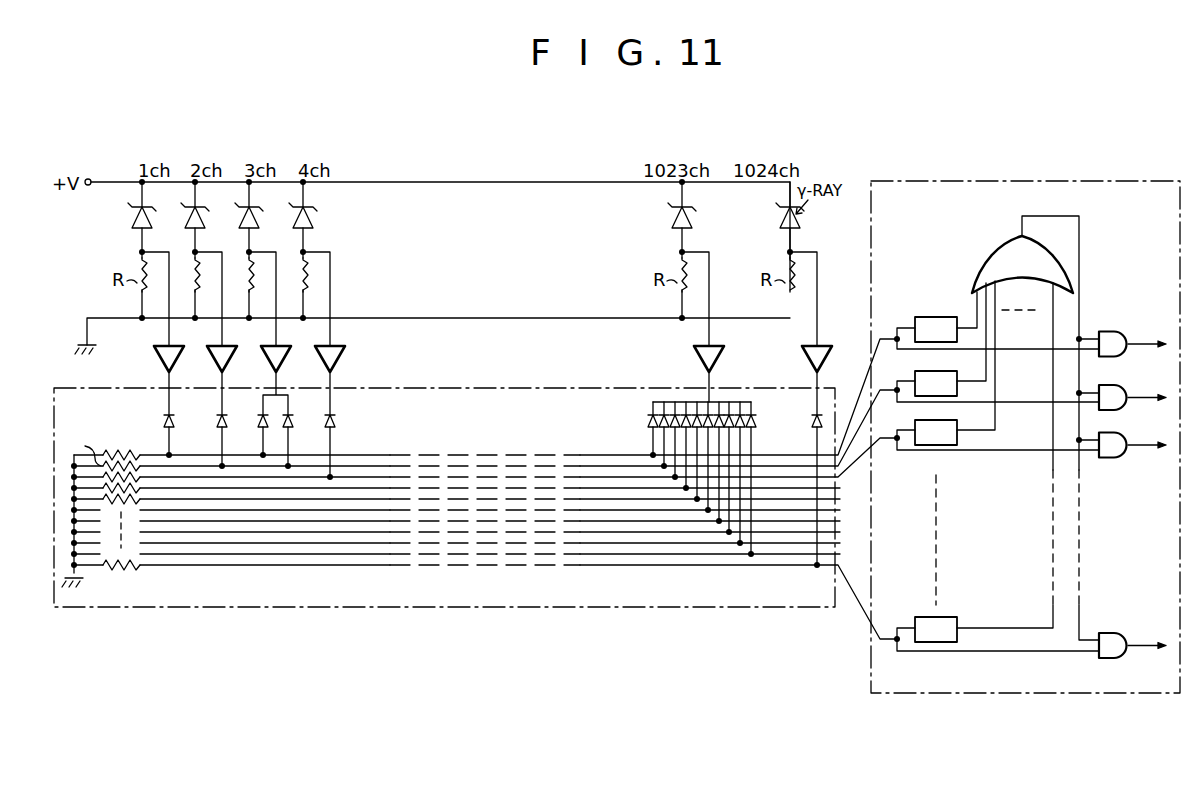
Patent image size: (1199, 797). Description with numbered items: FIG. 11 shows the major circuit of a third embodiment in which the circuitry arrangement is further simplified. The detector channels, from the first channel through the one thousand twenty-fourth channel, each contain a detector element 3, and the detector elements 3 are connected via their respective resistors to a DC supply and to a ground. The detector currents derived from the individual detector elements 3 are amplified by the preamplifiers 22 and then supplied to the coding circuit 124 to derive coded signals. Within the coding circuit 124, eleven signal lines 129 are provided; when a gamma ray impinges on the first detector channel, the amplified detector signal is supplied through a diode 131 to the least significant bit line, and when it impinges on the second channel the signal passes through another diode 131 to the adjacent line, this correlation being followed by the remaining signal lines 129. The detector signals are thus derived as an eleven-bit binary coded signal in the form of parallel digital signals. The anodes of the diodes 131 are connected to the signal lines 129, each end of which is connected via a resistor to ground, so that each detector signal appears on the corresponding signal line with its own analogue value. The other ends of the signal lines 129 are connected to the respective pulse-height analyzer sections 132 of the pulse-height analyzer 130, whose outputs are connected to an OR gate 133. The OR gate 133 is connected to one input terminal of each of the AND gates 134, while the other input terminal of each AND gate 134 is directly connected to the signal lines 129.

The detector elements 3 is at (133, 228).
The preamplifiers 22 is at (156, 364).
The coding circuit 124 is at (165, 607).
The signal lines 129 is at (354, 455).
The pulse-height analyzer 130 is at (1168, 181).
The diodes 131 is at (810, 414).
The pulse-height analyzer sections 132 is at (932, 308).
The OR gate 133 is at (1004, 252).
The AND gates 134 is at (1116, 331).